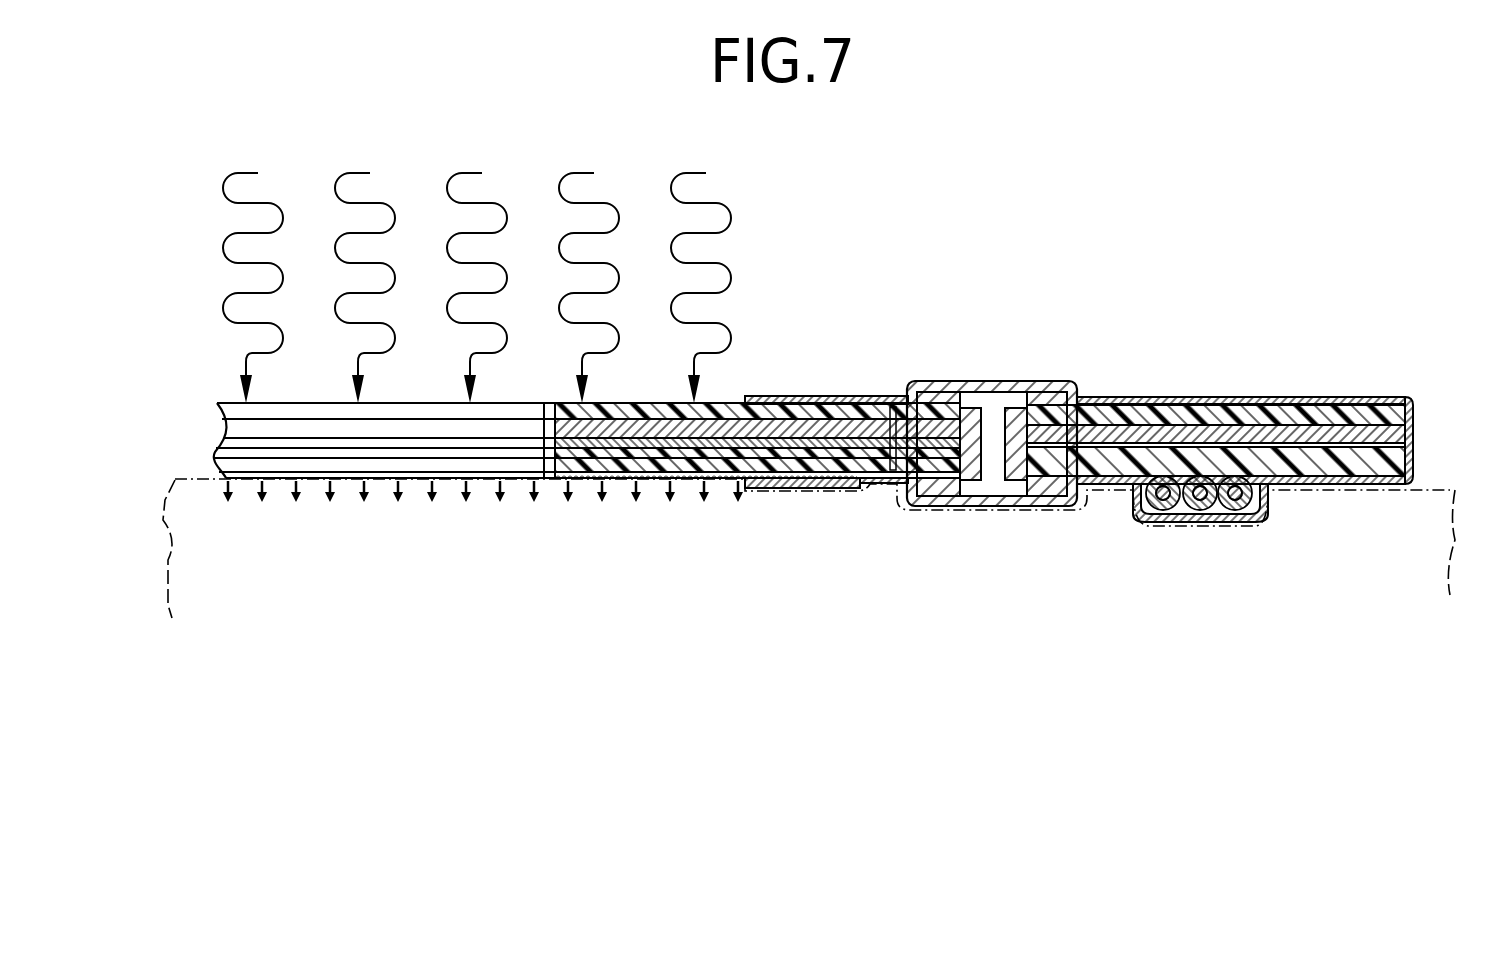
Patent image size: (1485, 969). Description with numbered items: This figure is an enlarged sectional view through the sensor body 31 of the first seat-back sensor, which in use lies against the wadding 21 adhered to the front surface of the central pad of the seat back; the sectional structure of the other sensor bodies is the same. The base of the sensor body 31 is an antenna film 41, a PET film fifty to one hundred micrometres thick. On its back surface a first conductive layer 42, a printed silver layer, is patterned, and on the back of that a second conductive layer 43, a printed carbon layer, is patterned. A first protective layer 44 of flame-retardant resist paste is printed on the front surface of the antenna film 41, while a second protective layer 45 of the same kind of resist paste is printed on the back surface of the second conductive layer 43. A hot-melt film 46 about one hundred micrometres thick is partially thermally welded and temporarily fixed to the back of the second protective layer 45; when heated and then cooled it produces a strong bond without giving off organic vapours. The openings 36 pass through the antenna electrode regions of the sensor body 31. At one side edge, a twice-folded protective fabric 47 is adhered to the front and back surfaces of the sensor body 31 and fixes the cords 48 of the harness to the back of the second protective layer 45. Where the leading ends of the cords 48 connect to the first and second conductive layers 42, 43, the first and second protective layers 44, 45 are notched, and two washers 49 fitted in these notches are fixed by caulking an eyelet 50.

The wadding 21 is at (1432, 488).
The sensor body 31 is at (430, 392).
The openings 36 is at (540, 432).
The antenna film 41 is at (568, 403).
The first conductive layer 42 is at (638, 445).
The second conductive layer 43 is at (723, 490).
The first protective layer 44 is at (723, 407).
The second protective layer 45 is at (650, 490).
The hot-melt film 46 is at (587, 497).
The protective fabric 47 is at (1245, 397).
The cords 48 is at (1212, 515).
The washers 49 is at (895, 398).
The eyelet 50 is at (1015, 398).